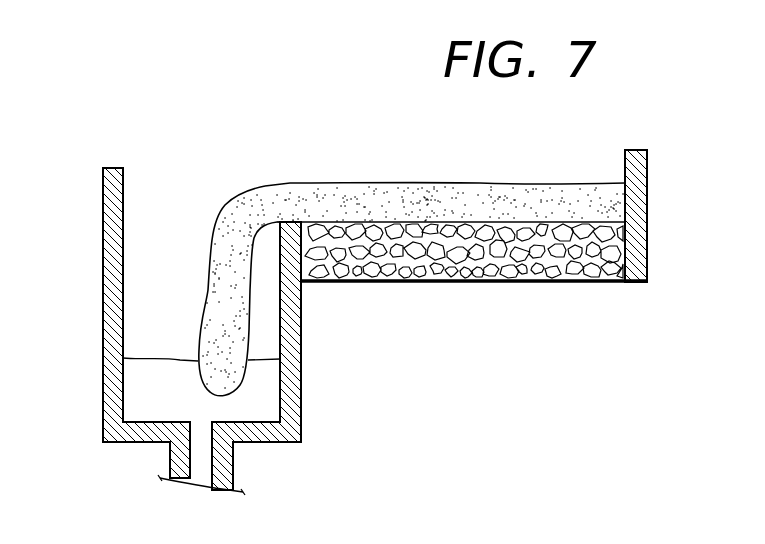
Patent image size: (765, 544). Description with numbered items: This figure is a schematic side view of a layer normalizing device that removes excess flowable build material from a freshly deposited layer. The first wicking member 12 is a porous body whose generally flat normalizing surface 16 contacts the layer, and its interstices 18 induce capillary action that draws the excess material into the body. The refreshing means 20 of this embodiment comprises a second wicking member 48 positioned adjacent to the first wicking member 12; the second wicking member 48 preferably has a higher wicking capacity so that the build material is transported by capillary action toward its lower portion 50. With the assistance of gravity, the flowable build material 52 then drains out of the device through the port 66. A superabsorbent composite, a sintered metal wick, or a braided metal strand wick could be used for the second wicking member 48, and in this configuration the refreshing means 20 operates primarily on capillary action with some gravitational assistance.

The wicking member 12 is at (566, 321).
The normalizing surface 16 is at (603, 282).
The interstices 18 is at (375, 247).
The refreshing means 20 is at (218, 174).
The second wicking member 48 is at (337, 190).
The lower portion of the second wicking member 50 is at (217, 285).
The flowable build material 52 is at (157, 392).
The port 66 is at (205, 457).